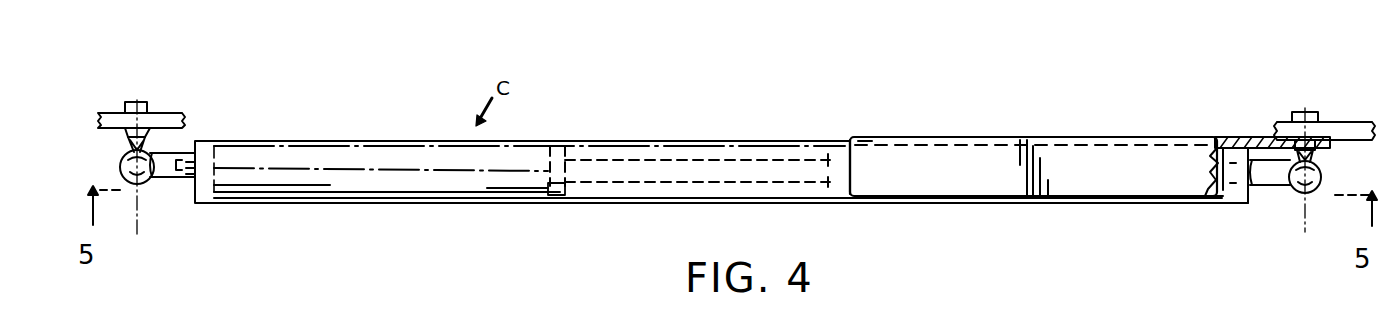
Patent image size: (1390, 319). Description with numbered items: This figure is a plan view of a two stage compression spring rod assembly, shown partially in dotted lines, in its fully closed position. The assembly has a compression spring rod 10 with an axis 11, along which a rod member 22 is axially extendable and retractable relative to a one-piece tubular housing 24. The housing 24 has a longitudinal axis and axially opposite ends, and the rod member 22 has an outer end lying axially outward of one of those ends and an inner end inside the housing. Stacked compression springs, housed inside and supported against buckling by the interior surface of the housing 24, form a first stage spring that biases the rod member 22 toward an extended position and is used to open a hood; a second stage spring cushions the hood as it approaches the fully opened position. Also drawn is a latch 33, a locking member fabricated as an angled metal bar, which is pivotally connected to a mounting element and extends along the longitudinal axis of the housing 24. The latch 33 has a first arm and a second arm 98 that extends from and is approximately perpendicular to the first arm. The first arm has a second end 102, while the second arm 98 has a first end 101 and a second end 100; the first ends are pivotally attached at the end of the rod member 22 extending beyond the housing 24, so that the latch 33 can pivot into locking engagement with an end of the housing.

The compression spring rod 10 is at (572, 204).
The axis 11 is at (350, 170).
The rod member 22 is at (680, 160).
The one-piece tubular housing 24 is at (265, 204).
The latch 33 is at (920, 160).
The second arm 98 is at (1078, 160).
The second end 100 is at (848, 136).
The first end 101 is at (1265, 146).
The second end 102 is at (870, 126).